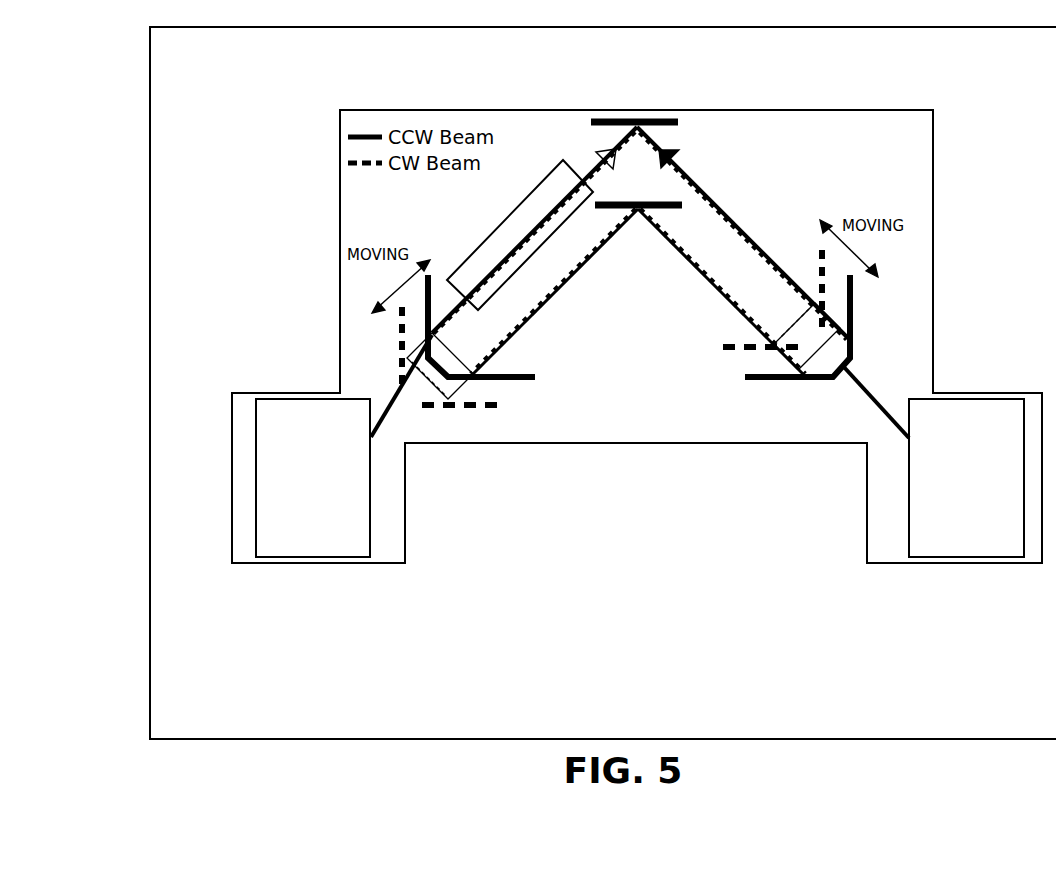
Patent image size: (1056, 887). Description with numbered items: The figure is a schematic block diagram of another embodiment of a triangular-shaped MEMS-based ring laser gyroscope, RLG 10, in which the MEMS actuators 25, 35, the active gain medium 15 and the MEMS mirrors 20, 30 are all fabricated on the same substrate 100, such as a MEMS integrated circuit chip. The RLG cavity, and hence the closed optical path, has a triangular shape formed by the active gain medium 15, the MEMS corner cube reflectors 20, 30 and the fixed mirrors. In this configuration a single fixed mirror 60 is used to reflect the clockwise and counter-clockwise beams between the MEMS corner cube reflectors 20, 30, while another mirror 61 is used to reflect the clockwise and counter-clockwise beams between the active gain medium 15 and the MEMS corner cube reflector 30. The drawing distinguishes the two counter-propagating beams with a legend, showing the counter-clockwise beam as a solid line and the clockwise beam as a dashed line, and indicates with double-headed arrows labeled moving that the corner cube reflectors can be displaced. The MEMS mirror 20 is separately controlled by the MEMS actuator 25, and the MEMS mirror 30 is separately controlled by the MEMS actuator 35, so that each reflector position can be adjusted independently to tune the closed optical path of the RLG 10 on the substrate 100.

The RLG 10 is at (124, 63).
The active gain medium 15 is at (510, 245).
The MEMS corner cube reflector 20 is at (478, 377).
The MEMS actuator 25 is at (303, 497).
The MEMS corner cube reflector 30 is at (852, 328).
The MEMS actuator 35 is at (957, 497).
The fixed mirror 60 is at (633, 201).
The mirror 61 is at (663, 117).
The substrate 100 is at (1004, 99).